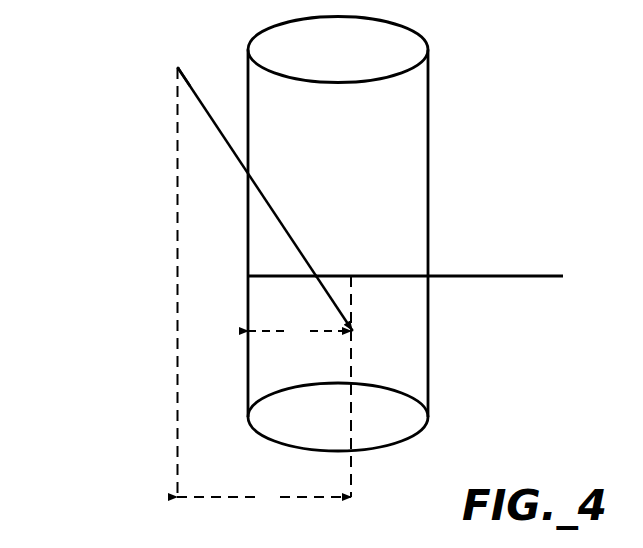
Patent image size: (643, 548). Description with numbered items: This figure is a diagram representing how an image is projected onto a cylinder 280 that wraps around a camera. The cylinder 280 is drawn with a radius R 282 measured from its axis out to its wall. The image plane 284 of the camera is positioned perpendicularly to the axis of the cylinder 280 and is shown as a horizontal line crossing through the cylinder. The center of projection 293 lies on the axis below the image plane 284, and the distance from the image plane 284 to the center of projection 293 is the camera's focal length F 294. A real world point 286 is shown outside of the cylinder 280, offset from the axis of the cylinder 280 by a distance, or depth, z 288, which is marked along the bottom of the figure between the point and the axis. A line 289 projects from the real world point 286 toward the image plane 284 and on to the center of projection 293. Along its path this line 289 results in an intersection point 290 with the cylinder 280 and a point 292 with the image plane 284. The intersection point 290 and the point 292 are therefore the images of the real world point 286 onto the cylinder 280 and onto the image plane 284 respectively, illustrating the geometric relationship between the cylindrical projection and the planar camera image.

The cylinder 280 is at (428, 101).
The radius R 282 is at (299, 341).
The image plane 284 is at (514, 275).
The real world point 286 is at (156, 73).
The distance z 288 is at (264, 299).
The line 289 is at (191, 82).
The intersection point 290 is at (265, 199).
The point 292 is at (318, 274).
The center of projection 293 is at (372, 341).
The focal length F 294 is at (384, 386).